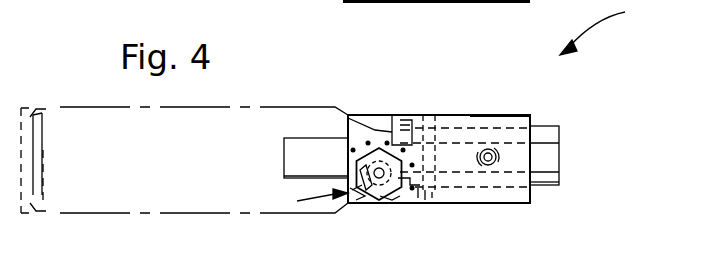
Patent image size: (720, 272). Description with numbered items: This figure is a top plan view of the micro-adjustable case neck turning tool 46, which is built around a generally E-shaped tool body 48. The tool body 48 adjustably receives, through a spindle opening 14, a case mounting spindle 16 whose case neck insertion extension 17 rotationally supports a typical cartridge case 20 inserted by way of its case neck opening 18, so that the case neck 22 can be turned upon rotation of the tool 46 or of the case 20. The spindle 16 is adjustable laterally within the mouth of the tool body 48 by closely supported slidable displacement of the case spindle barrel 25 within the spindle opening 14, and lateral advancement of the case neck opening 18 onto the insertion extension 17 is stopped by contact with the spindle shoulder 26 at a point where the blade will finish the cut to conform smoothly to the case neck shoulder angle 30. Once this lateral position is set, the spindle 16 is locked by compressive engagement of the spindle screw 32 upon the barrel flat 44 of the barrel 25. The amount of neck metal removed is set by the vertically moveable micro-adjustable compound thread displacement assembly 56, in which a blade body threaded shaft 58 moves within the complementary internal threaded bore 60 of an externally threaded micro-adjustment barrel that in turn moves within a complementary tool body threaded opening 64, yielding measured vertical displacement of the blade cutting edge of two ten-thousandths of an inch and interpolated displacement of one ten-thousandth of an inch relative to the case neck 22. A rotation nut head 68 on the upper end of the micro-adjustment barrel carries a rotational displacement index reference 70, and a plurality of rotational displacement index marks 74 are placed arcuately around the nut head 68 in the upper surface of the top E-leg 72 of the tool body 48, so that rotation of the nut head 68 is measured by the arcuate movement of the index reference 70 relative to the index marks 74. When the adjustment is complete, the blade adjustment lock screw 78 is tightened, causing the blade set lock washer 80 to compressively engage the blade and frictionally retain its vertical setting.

The spindle opening 14 is at (515, 193).
The case mounting spindle 16 is at (538, 126).
The case neck insertion extension 17 is at (300, 140).
The case neck opening 18 is at (418, 132).
The cartridge case 20 is at (104, 107).
The case neck 22 is at (374, 127).
The case spindle barrel 25 is at (548, 183).
The spindle shoulder 26 is at (414, 135).
The case neck shoulder angle 30 is at (344, 114).
The spindle screw 32 is at (489, 168).
The barrel flat 44 is at (538, 160).
The micro-adjustable case neck turning tool 46 is at (608, 27).
The generally E-shaped tool body 48 is at (505, 113).
The micro-adjustable compound thread displacement assembly 56 is at (310, 201).
The blade body threaded shaft 58 is at (368, 178).
The internal threaded bore 60 is at (370, 170).
The tool body threaded opening 64 is at (372, 203).
The rotation nut head 68 is at (383, 140).
The rotational displacement index reference 70 is at (402, 190).
The top E-leg 72 is at (478, 118).
The rotational displacement index marks 74 is at (351, 147).
The blade adjustment lock screw 78 is at (391, 204).
The blade set lock washer 80 is at (425, 204).